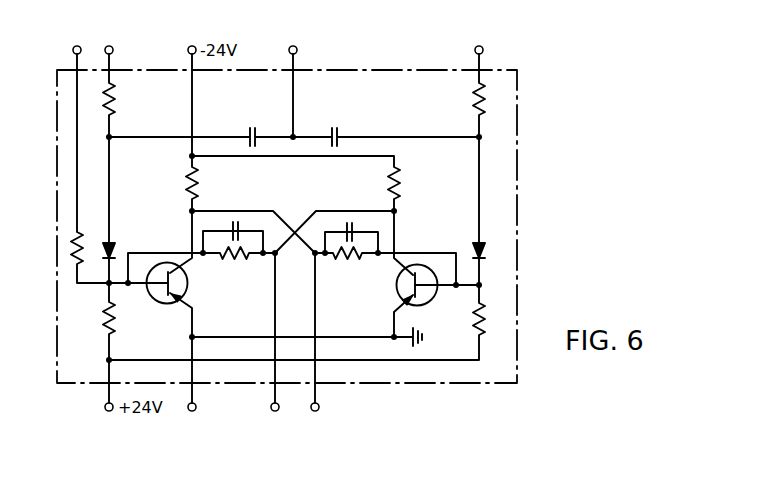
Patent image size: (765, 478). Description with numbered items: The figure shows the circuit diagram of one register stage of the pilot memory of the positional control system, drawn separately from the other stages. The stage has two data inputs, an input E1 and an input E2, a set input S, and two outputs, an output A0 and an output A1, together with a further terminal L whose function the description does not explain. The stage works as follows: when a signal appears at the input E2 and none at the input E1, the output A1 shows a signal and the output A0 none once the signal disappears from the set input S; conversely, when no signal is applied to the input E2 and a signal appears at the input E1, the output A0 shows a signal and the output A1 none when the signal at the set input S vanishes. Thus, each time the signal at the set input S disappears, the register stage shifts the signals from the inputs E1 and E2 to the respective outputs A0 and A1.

The load terminal L is at (119, 157).
The input E1 is at (108, 84).
The input E2 is at (478, 84).
The set input S is at (293, 84).
The output A0 is at (275, 344).
The output A1 is at (315, 344).